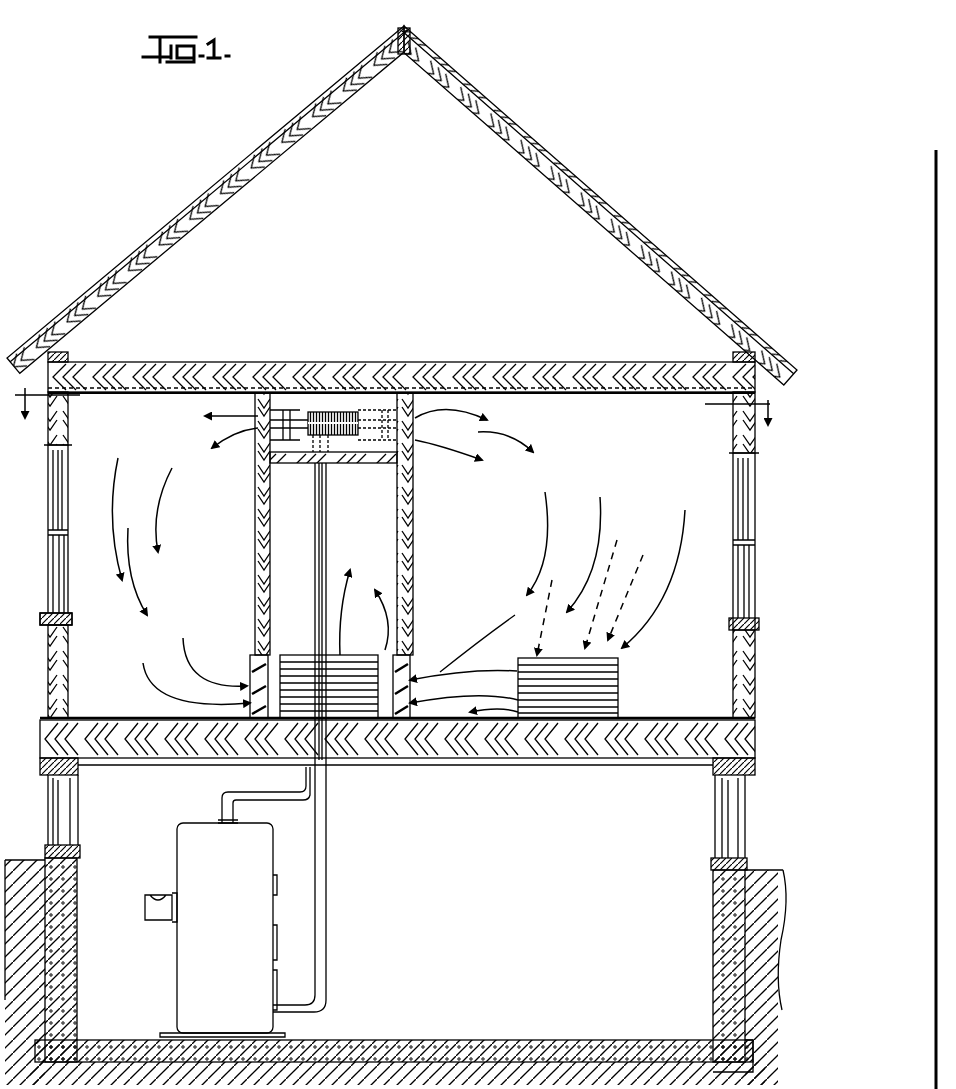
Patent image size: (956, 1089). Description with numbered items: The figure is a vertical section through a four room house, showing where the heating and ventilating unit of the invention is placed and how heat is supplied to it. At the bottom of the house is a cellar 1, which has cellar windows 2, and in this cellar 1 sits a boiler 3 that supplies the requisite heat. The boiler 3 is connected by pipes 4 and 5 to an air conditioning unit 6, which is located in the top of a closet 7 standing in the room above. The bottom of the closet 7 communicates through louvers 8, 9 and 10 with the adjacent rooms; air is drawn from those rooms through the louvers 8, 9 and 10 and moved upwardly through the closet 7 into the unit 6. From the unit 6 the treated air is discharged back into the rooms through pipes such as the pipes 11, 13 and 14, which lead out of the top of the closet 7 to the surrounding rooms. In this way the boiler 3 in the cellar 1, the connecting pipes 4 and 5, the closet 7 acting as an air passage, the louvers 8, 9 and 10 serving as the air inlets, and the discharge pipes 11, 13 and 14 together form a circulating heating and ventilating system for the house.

The cellar 1 is at (456, 917).
The cellar windows 2 is at (715, 812).
The boiler 3 is at (236, 958).
The pipe 4 is at (328, 830).
The pipe 5 is at (295, 795).
The air conditioning unit 6 is at (310, 398).
The closet 7 is at (365, 503).
The louver 8 is at (255, 670).
The louver 9 is at (618, 690).
The louver 10 is at (411, 667).
The pipe 11 is at (398, 425).
The pipe 13 is at (293, 445).
The pipe 14 is at (340, 398).